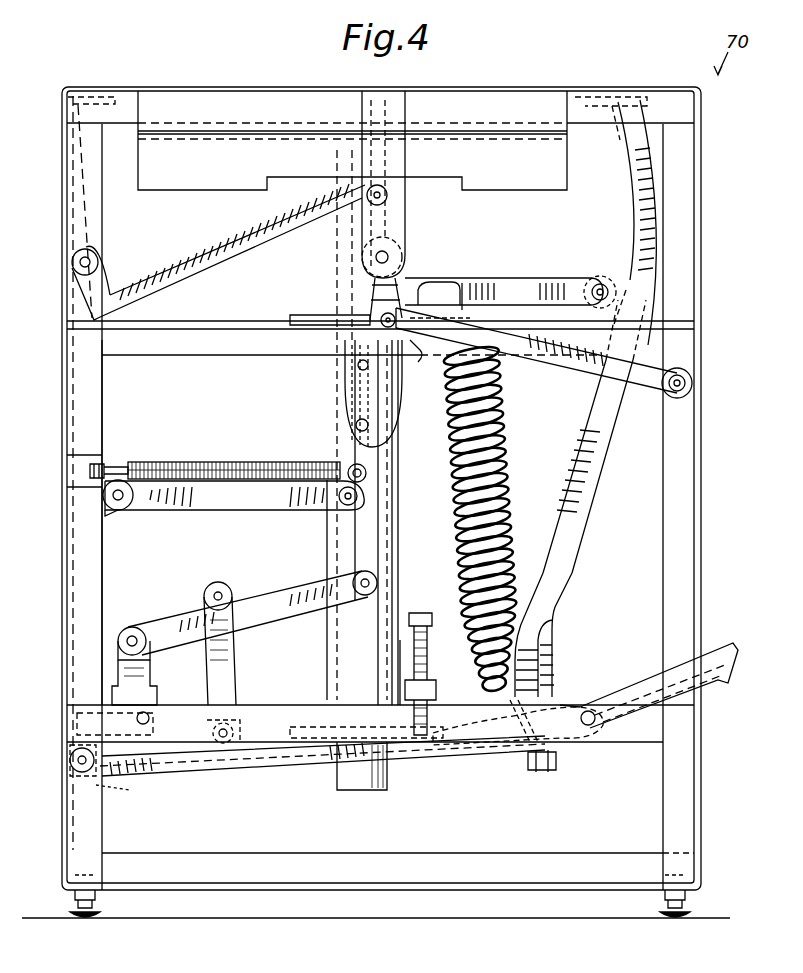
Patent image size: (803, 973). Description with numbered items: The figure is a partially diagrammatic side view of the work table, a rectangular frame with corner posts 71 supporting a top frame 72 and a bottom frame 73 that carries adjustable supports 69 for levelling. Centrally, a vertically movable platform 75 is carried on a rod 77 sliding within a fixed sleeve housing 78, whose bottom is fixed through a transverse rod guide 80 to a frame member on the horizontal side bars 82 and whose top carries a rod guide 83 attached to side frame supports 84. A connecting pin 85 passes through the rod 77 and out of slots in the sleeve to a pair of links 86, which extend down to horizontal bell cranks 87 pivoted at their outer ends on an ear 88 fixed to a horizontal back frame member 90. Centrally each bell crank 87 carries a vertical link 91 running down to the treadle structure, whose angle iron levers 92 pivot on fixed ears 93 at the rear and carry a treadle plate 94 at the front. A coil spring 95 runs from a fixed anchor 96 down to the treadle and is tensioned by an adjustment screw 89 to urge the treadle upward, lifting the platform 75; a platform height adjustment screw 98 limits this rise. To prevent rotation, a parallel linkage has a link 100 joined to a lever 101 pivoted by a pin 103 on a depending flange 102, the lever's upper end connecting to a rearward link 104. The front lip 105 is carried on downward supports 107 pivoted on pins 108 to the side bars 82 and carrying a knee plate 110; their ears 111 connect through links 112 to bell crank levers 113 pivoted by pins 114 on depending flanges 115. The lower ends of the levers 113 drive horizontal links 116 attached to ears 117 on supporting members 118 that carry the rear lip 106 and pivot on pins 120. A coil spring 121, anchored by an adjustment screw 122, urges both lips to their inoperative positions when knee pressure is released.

The adjustable supports 69 is at (74, 896).
The corner posts 71 is at (68, 440).
The top frame 72 is at (690, 112).
The bottom frame 73 is at (400, 885).
The platform 75 is at (518, 183).
The rod 77 is at (388, 783).
The sleeve housing 78 is at (399, 462).
The transverse rod guide 80 is at (305, 725).
The horizontal side bars 82 is at (256, 720).
The rod guide 83 is at (300, 313).
The side frame supports 84 is at (218, 330).
The connecting pin 85 is at (357, 366).
The links 86 is at (357, 527).
The bell cranks 87 is at (273, 592).
The ear 88 is at (134, 627).
The adjustment screw 89 is at (556, 770).
The horizontal back frame member 90 is at (152, 690).
The vertically directed link 91 is at (236, 640).
The angle iron levers 92 is at (276, 764).
The fixed ears 93 is at (109, 775).
The treadle plate 94 is at (722, 646).
The coil spring 95 is at (470, 548).
The fixed anchor 96 is at (440, 290).
The platform height adjustment screw 98 is at (428, 650).
The link 100 is at (558, 364).
The lever 101 is at (372, 292).
The depending flange 102 is at (407, 207).
The pin 103 is at (388, 257).
The link 104 is at (240, 242).
The front lip 105 is at (610, 98).
The rear lip 106 is at (112, 98).
The supports 107 is at (538, 582).
The pins 108 is at (583, 712).
The knee plate 110 is at (580, 500).
The ears 111 is at (616, 284).
The links 112 is at (510, 280).
The levers 113 is at (350, 456).
The pins 114 is at (356, 424).
The depending flanges 115 is at (412, 362).
The horizontally extending links 116 is at (218, 510).
The ears 117 is at (120, 510).
The supporting members 118 is at (104, 408).
The pins 120 is at (150, 718).
The coil spring 121 is at (252, 461).
The adjustment screw 122 is at (120, 464).